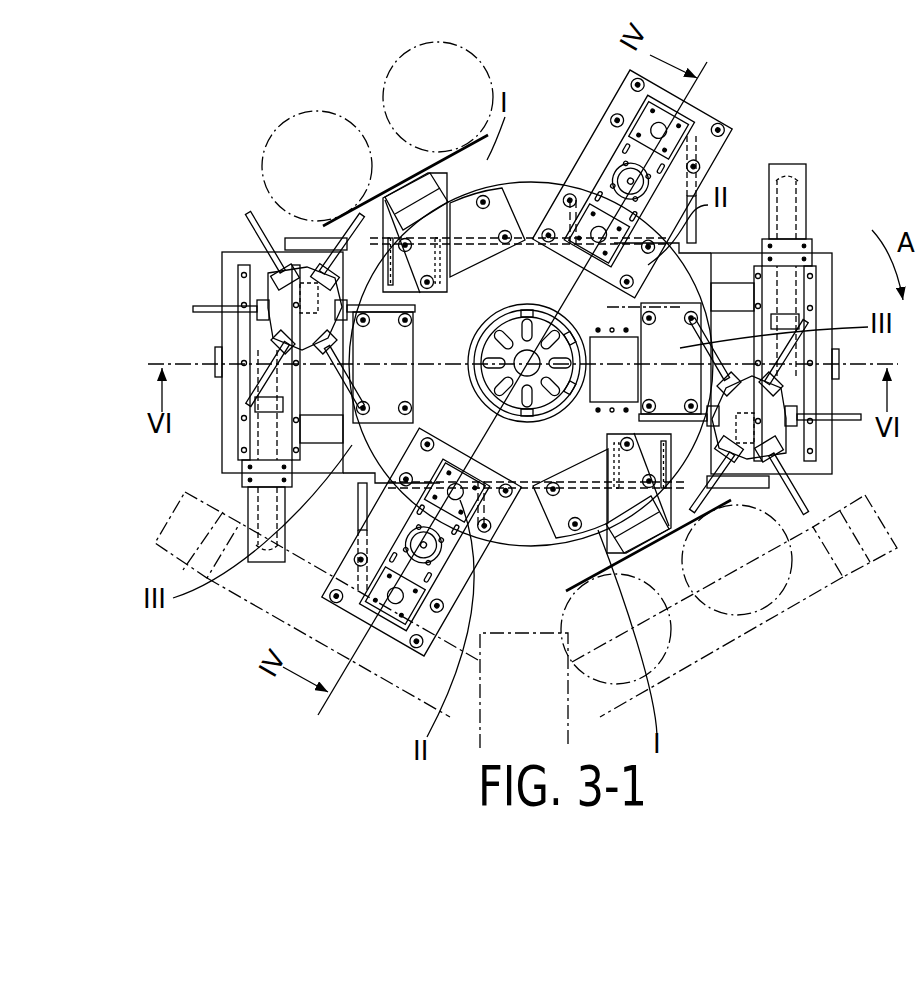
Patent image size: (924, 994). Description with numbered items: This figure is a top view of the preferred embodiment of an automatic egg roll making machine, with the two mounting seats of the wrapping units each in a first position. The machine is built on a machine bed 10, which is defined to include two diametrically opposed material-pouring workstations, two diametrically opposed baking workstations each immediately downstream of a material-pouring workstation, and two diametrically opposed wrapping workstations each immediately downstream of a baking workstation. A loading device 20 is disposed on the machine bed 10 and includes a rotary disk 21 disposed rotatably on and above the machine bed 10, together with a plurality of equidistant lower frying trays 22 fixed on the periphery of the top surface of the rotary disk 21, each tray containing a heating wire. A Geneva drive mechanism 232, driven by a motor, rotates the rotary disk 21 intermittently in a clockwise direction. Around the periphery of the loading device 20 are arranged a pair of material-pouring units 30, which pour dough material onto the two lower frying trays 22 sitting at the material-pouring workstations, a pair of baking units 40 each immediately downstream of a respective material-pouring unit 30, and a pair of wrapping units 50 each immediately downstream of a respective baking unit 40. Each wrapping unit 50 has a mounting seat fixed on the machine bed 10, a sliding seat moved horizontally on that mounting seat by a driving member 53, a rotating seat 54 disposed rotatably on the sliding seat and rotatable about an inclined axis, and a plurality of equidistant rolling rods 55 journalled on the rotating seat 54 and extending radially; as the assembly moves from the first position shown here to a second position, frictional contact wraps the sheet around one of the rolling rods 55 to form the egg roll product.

The machine bed 10 is at (737, 235).
The loading device 20 is at (543, 177).
The rotary disk 21 is at (527, 203).
The lower frying tray 22 is at (558, 193).
The material-pouring unit 30 is at (377, 137).
The baking unit 40 is at (613, 83).
The wrapping unit 50 is at (267, 347).
The driving member 53 is at (793, 197).
The rotating seat 54 is at (810, 248).
The rolling rod 55 is at (650, 313).
The Geneva drive mechanism 232 is at (524, 668).